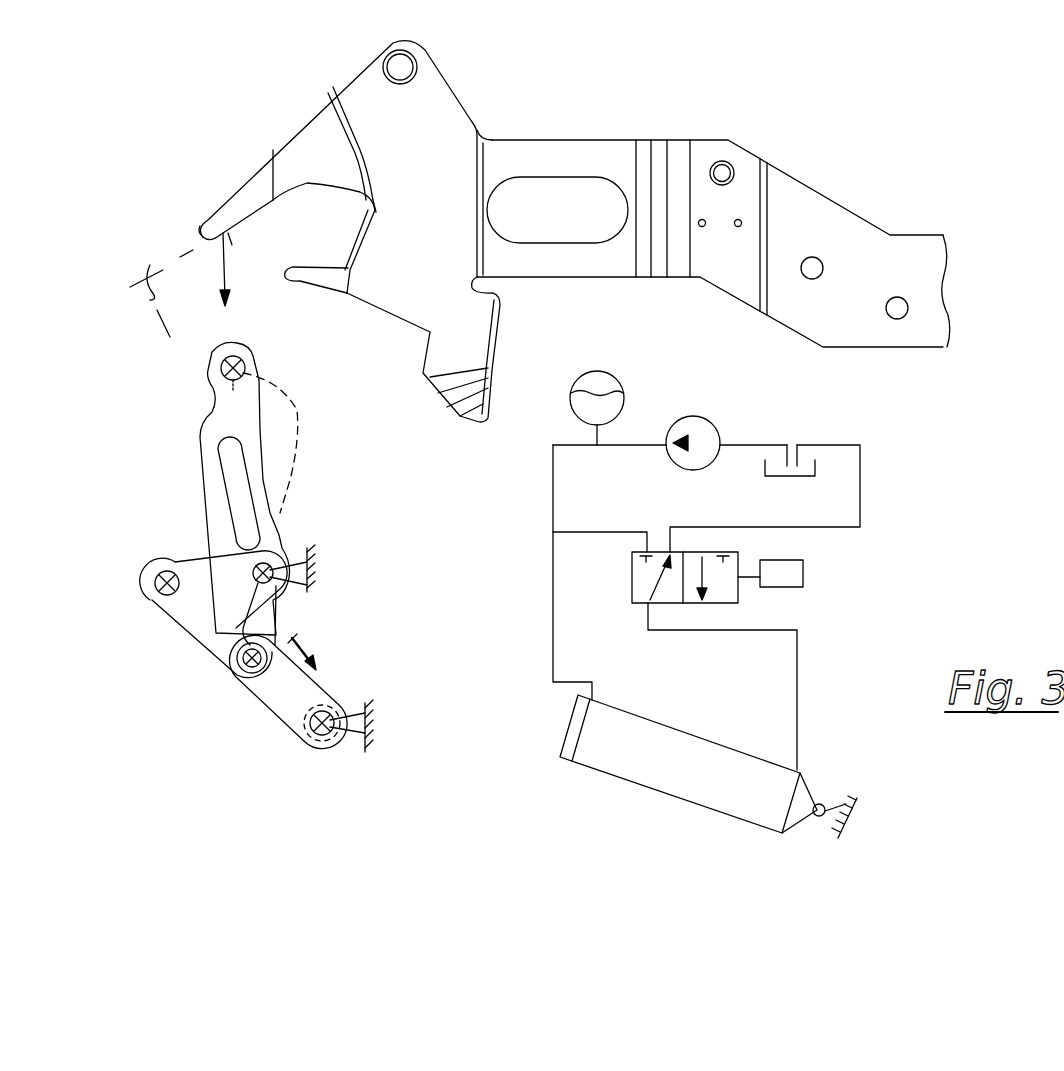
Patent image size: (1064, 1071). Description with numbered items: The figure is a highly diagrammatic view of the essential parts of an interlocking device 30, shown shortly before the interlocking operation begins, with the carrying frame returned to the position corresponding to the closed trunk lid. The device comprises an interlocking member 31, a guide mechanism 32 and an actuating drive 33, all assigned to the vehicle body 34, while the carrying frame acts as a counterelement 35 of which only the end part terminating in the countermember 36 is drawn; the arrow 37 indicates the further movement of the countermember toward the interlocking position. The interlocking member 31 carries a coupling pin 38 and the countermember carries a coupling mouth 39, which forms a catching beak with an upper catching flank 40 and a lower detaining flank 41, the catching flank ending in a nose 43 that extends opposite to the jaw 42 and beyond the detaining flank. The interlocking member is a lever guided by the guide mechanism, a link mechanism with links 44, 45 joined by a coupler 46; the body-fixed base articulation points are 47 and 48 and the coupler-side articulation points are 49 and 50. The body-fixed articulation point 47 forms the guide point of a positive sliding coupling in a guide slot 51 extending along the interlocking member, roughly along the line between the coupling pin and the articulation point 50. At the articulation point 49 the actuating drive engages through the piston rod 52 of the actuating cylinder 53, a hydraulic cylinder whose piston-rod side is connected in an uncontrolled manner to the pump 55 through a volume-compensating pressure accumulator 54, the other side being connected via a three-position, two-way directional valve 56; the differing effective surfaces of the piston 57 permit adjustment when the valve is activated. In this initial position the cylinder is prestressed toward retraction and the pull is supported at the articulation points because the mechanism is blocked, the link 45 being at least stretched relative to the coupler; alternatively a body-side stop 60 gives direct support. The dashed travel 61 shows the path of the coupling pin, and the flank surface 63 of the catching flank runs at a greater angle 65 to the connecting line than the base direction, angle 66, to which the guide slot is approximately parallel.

The interlocking device 30 is at (124, 376).
The interlocking member 31 is at (212, 421).
The guide mechanism 32 is at (178, 706).
The actuating drive 33 is at (579, 779).
The vehicle body 34 is at (312, 556).
The counterelement 35 is at (860, 225).
The countermember 36 is at (328, 86).
The arrow 37 is at (222, 280).
The coupling pin 38 is at (240, 362).
The coupling mouth 39 is at (341, 246).
The catching flank 40 is at (288, 150).
The detaining flank 41 is at (333, 287).
The jaw 42 is at (366, 214).
The nose 43 is at (207, 222).
The link 44 is at (203, 573).
The link 45 is at (275, 706).
The coupler 46 is at (208, 636).
The articulation point 47 is at (270, 583).
The articulation point 48 is at (322, 737).
The articulation point 49 is at (570, 722).
The articulation point 50 is at (245, 668).
The guide slot 51 is at (233, 468).
The piston rod 52 is at (495, 700).
The actuating cylinder 53 is at (688, 725).
The pressure accumulator 54 is at (610, 380).
The pump 55 is at (703, 425).
The 3/2-way valve 56 is at (628, 578).
The piston 57 is at (585, 738).
The body-side stop 60 is at (312, 660).
The travel of the coupling pin 61 is at (294, 394).
The flank surface 63 is at (253, 225).
The angle 65 is at (232, 240).
The angle 66 is at (150, 265).